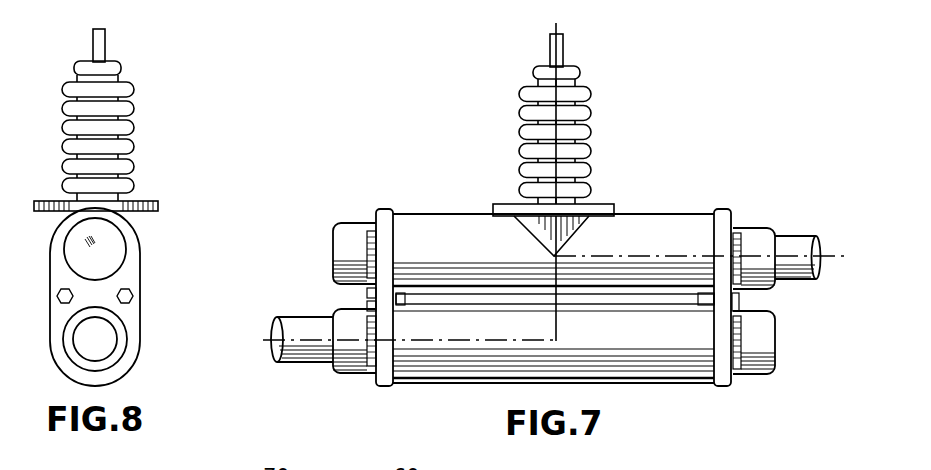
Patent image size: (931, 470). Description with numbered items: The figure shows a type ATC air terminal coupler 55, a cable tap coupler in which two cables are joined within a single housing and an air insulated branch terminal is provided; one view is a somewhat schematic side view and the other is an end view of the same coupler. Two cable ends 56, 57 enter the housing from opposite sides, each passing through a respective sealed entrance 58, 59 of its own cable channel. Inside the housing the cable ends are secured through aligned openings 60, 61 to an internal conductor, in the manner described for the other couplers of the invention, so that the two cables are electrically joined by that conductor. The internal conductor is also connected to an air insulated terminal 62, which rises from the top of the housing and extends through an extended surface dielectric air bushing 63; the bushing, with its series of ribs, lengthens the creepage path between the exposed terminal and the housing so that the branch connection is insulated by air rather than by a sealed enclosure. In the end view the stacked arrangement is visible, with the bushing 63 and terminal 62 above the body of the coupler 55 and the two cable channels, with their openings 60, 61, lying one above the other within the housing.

In FIG. 8, the air terminal coupler 55 is at (139, 272).
In FIG. 7, the air terminal coupler 55 is at (668, 212).
In FIG. 8, the cable end 56 is at (112, 350).
In FIG. 7, the cable end 56 is at (288, 367).
In FIG. 7, the cable end 57 is at (803, 236).
In FIG. 7, the sealed entrance 58 is at (347, 378).
In FIG. 7, the sealed entrance 59 is at (760, 227).
In FIG. 7, the aligned opening 60 is at (775, 343).
In FIG. 8, the aligned opening 61 is at (112, 243).
In FIG. 7, the aligned opening 61 is at (336, 228).
In FIG. 8, the air insulated terminal 62 is at (105, 35).
In FIG. 7, the air insulated terminal 62 is at (562, 43).
In FIG. 8, the extended surface dielectric air bushing 63 is at (133, 88).
In FIG. 7, the extended surface dielectric air bushing 63 is at (590, 93).